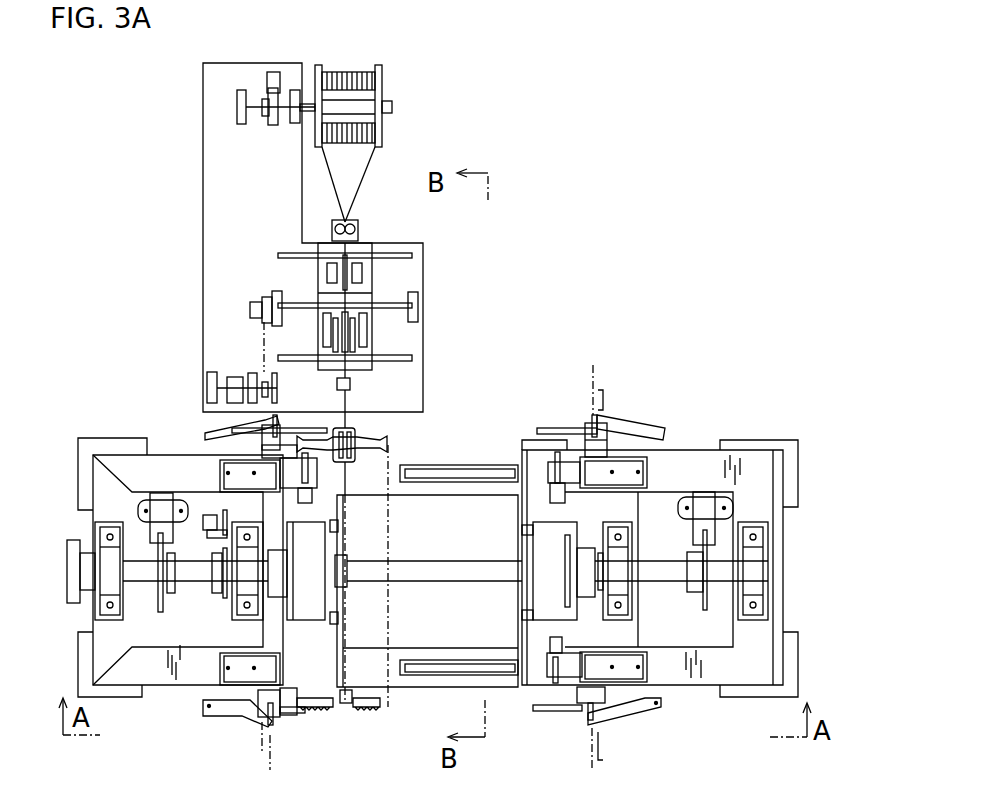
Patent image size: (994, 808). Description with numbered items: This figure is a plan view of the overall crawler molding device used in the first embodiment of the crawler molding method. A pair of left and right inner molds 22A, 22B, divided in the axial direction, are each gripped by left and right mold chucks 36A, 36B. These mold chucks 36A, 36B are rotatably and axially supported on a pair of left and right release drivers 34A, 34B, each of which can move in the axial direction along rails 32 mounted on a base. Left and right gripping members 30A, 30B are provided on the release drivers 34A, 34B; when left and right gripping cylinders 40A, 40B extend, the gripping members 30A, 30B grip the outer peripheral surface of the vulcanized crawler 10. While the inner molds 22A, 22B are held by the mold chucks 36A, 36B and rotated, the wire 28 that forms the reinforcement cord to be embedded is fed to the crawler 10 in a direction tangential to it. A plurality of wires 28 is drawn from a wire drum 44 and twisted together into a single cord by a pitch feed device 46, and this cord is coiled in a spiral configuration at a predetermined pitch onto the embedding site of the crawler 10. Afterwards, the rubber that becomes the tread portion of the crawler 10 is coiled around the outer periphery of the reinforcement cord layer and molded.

The crawler 10 is at (358, 705).
The left inner mold 22A is at (330, 695).
The right inner mold 22B is at (521, 440).
The wire 28 is at (333, 182).
The left gripping member 30A is at (305, 713).
The right gripping member 30B is at (548, 710).
The rails 32 is at (453, 462).
The left release driver 34A is at (163, 453).
The right release driver 34B is at (683, 450).
The left mold chuck 36A is at (317, 547).
The right mold chuck 36B is at (543, 538).
The left gripping cylinder 40A is at (228, 720).
The right gripping cylinder 40B is at (637, 717).
The wire drum 44 is at (372, 133).
The pitch feed device 46 is at (370, 332).